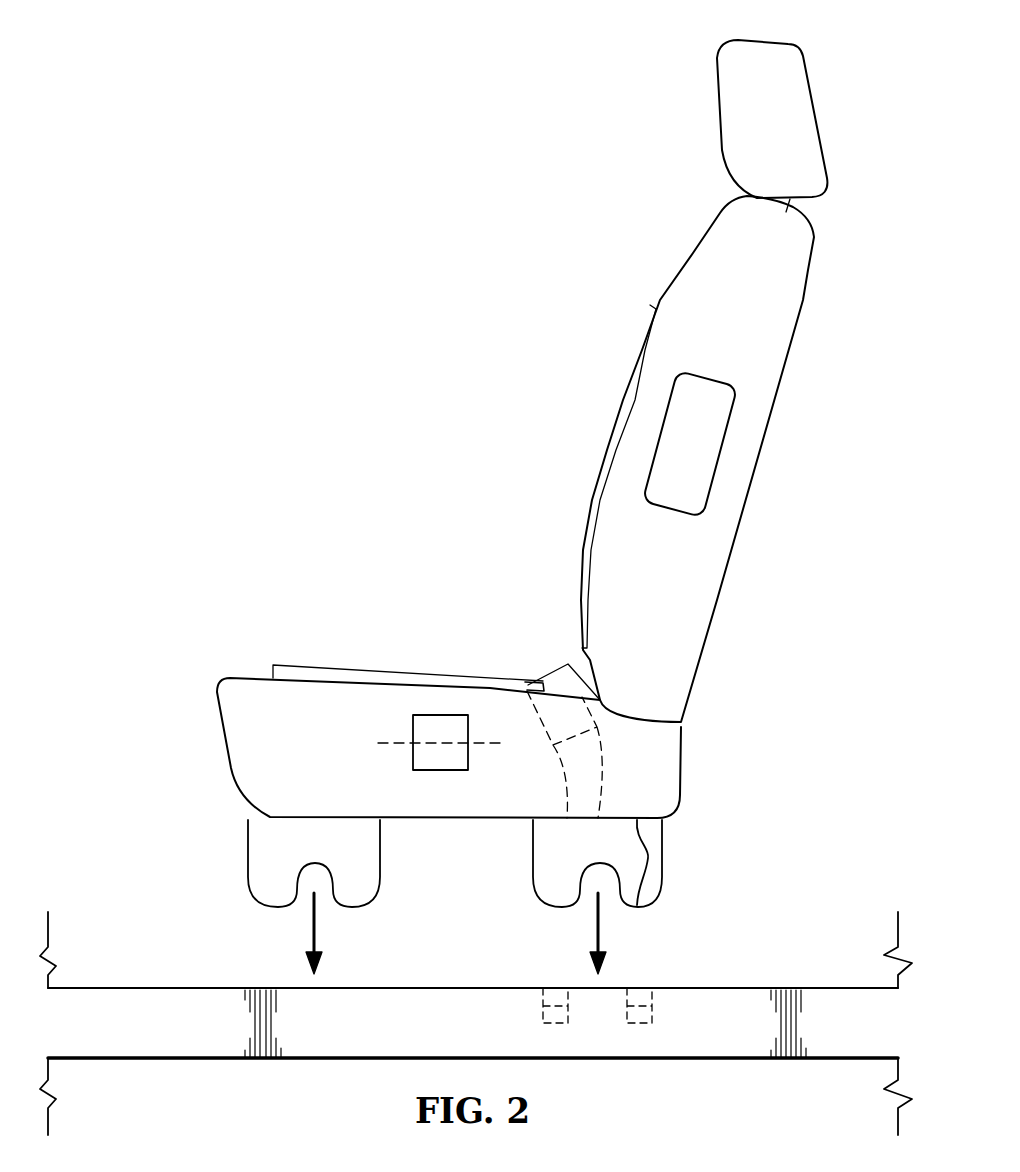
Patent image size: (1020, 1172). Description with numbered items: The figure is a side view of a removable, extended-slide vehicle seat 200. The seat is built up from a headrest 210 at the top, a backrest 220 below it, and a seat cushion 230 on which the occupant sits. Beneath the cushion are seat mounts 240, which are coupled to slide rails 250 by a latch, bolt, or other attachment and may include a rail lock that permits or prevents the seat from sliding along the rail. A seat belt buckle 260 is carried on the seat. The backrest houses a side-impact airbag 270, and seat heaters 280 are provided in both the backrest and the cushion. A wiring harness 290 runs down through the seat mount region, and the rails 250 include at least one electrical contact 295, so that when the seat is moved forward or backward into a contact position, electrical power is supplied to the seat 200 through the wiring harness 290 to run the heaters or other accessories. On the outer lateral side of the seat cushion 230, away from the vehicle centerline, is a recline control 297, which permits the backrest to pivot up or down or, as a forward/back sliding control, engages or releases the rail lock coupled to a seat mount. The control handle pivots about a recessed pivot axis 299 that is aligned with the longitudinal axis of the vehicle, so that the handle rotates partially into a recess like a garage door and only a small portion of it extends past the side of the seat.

The removable, extended-slide vehicle seat 200 is at (330, 160).
The headrest 210 is at (718, 104).
The backrest 220 is at (684, 282).
The seat cushion 230 is at (228, 735).
The seat mounts 240 is at (248, 851).
The slide rails 250 is at (190, 989).
The seat belt buckle 260 is at (566, 771).
The side-impact airbag 270 is at (709, 373).
The seat heaters 280 is at (580, 541).
The wiring harness 290 is at (650, 856).
The electrical contact 295 is at (663, 1002).
The recline control 297 is at (444, 714).
The pivot axis 299 is at (388, 743).